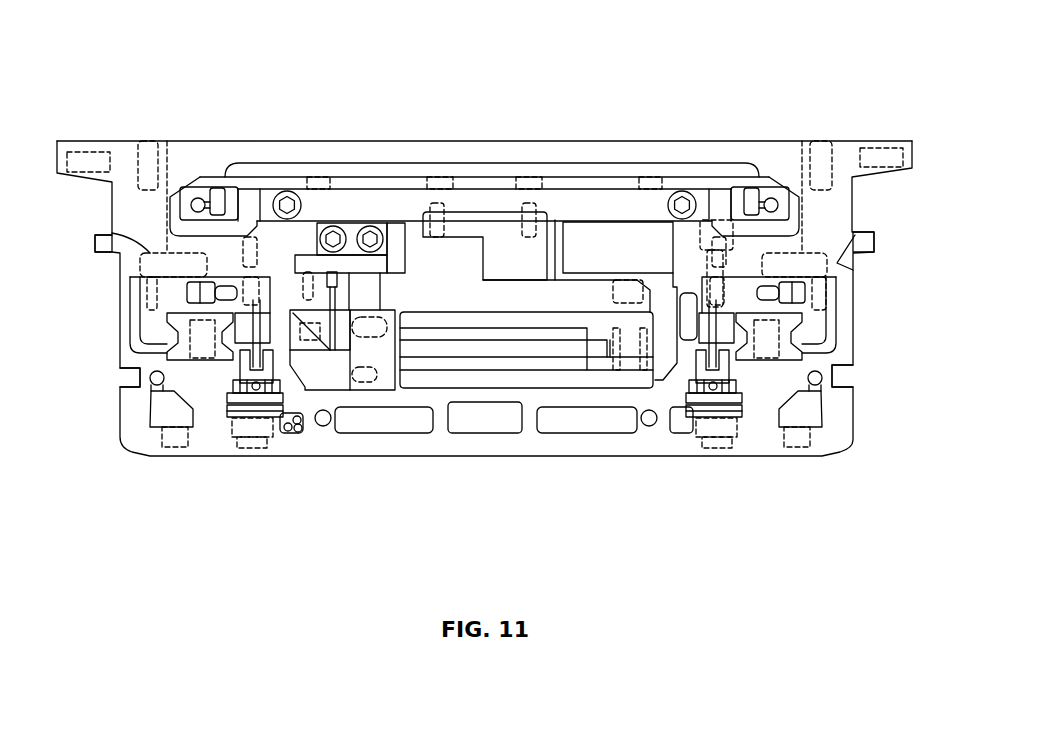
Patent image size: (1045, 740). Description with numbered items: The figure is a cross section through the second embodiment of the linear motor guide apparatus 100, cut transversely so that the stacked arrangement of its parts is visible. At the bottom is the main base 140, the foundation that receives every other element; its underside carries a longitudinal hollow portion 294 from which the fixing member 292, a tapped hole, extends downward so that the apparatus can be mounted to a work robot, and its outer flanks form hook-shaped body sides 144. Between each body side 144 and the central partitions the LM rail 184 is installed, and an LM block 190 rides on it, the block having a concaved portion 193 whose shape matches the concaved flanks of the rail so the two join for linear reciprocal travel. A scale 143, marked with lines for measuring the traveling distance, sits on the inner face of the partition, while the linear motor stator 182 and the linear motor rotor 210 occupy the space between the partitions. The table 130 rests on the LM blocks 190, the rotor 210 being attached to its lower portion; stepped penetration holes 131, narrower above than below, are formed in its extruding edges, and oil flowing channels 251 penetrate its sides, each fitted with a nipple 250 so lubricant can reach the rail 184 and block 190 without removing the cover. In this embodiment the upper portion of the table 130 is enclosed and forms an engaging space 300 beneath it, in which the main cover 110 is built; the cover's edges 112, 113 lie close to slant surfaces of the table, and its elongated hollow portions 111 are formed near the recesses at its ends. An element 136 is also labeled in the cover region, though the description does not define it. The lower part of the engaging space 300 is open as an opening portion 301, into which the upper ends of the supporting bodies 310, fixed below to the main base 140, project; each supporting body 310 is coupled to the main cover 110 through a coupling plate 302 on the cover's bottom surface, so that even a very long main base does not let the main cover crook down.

The linear motor guide apparatus 100 is at (176, 97).
The main cover 110 is at (335, 164).
The elongated hollow portion 111 is at (222, 197).
The edge of the main cover 112 is at (193, 178).
The edge of the main cover 113 is at (782, 187).
The table 130 is at (759, 139).
The stepped penetration hole 131 is at (82, 139).
The fastening bolt 136 is at (162, 232).
The main base 140 is at (680, 457).
The scale 143 is at (316, 420).
The body side 144 is at (857, 358).
The linear motor stator 182 is at (550, 370).
The LM rail 184 is at (180, 357).
The LM block 190 is at (150, 337).
The concaved portion 193 is at (173, 317).
The linear motor rotor 210 is at (446, 352).
The nipple 250 is at (197, 303).
The oil flowing channel 251 is at (112, 233).
The fixing member 292 is at (170, 458).
The hollow portion 294 is at (157, 412).
The engaging space 300 is at (460, 172).
The opening portion 301 is at (548, 248).
The coupling plate 302 is at (380, 207).
The supporting body 310 is at (548, 215).